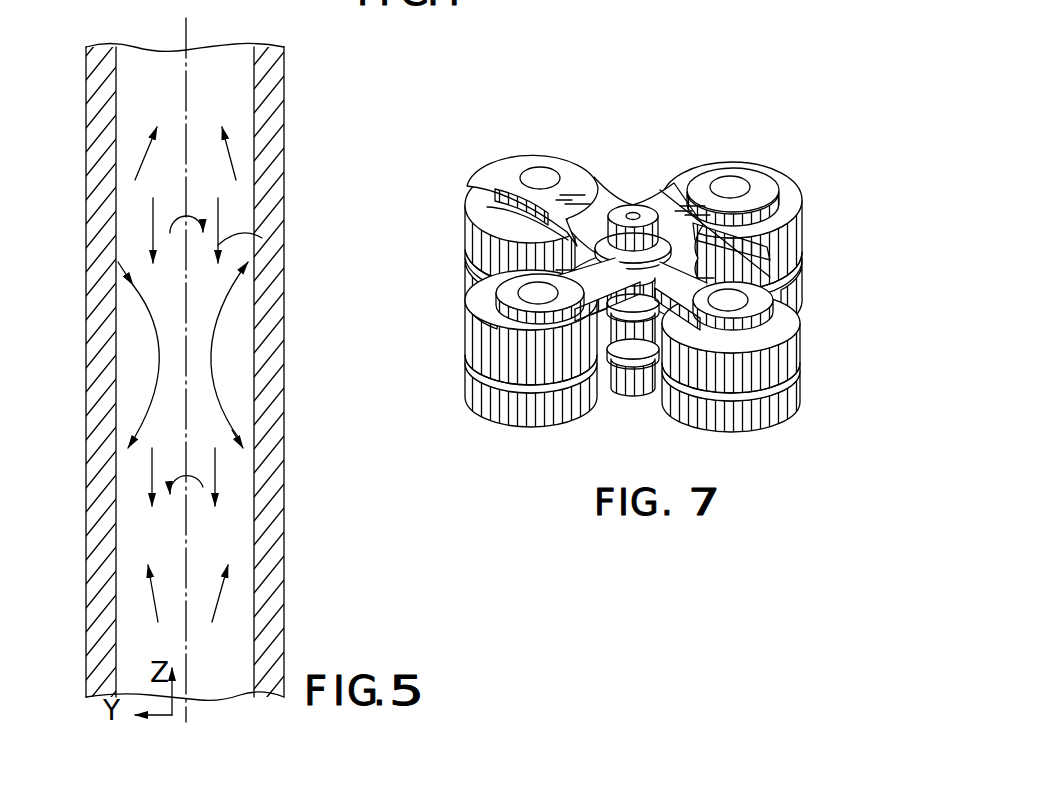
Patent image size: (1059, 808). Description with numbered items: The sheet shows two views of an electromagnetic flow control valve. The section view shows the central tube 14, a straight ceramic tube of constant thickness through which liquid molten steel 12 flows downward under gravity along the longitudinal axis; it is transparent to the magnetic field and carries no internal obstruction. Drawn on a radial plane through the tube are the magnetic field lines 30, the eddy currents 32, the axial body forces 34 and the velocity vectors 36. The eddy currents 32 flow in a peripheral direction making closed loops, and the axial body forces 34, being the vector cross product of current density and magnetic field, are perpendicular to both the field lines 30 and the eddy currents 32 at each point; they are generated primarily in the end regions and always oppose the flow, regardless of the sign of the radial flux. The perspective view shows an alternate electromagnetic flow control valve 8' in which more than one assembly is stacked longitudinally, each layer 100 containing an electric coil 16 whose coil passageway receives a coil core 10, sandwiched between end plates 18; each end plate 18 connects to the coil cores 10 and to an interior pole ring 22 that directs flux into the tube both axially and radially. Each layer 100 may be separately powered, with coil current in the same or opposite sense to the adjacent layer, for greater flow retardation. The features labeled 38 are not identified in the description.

In FIG. 7, the electromagnetic flow control valve 8' is at (617, 287).
In FIG. 7, the coil core 10 is at (728, 300).
In FIG. 5, the liquid molten steel 12 is at (230, 657).
In FIG. 7, the liquid molten steel 12 is at (633, 212).
In FIG. 5, the central tube 14 is at (88, 630).
In FIG. 7, the central tube 14 is at (648, 227).
In FIG. 7, the electric coil 16 is at (778, 313).
In FIG. 7, the end plate 18 is at (767, 190).
In FIG. 7, the interior pole ring 22 is at (612, 208).
In FIG. 5, the magnetic field lines 30 is at (212, 364).
In FIG. 5, the eddy currents 32 is at (210, 206).
In FIG. 5, the axial body forces 34 is at (232, 150).
In FIG. 5, the velocity vectors 36 is at (262, 238).
In FIG. 7, the slots 38 is at (500, 190).
In FIG. 7, the layer 100 is at (463, 334).